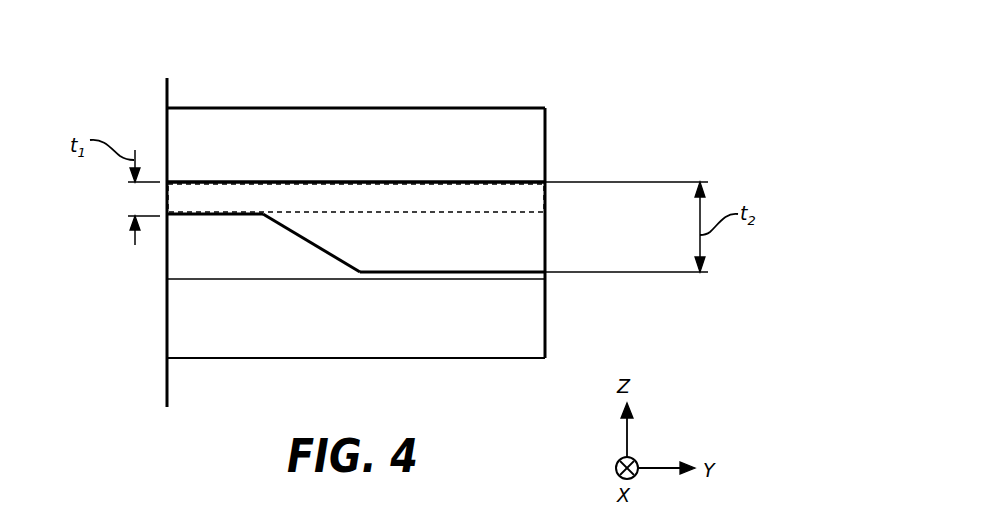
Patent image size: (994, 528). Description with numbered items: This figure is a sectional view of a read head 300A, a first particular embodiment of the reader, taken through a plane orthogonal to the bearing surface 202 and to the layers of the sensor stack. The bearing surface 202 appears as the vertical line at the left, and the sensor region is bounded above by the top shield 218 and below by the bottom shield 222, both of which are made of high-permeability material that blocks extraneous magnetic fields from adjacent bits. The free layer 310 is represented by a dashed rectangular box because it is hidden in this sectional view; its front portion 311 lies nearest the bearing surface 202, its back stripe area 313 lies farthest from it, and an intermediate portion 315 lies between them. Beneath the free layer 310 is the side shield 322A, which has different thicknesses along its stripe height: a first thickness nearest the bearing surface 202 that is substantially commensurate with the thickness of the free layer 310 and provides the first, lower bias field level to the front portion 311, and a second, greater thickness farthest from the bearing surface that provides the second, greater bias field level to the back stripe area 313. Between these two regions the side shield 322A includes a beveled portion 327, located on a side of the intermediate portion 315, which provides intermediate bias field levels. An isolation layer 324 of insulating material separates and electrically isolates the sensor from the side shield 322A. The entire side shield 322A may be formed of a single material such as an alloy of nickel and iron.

The read head 300A is at (668, 73).
The bearing surface 202 is at (165, 91).
The top shield 218 is at (462, 130).
The free layer 310 is at (521, 182).
The front portion of the free layer 311 is at (238, 197).
The portion of the free layer between the front portion and the rear portion 315 is at (358, 197).
The back stripe area 313 is at (498, 197).
The side shield 322A is at (510, 233).
The beveled portion 327 is at (317, 248).
The isolation layer 324 is at (203, 248).
The bottom shield 222 is at (480, 320).